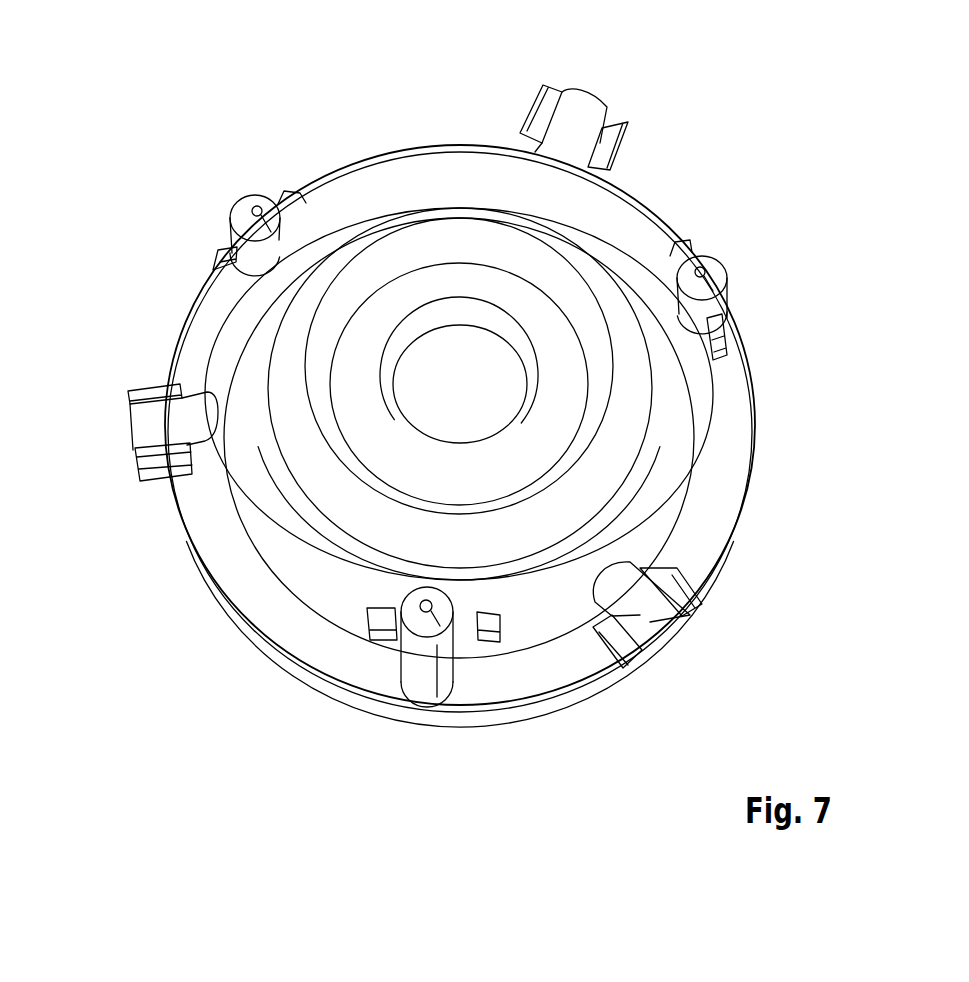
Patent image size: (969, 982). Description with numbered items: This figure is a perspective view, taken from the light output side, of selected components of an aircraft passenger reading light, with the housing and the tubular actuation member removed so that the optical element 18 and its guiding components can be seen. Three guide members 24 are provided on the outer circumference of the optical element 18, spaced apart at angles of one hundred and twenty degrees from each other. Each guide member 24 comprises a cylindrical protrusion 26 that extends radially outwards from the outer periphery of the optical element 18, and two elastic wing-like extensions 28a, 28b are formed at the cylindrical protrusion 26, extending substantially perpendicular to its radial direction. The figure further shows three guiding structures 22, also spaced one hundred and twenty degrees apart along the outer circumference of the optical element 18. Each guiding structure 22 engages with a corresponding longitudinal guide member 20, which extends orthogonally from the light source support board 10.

The light source support board 10 is at (328, 668).
The optical element 18 is at (650, 425).
The longitudinal guide member 20 is at (243, 207).
The guiding structure 22 is at (292, 197).
The guide member 24 is at (428, 372).
The cylindrical protrusion 26 is at (598, 100).
The wing-like extension 28a is at (630, 126).
The wing-like extension 28b is at (540, 86).